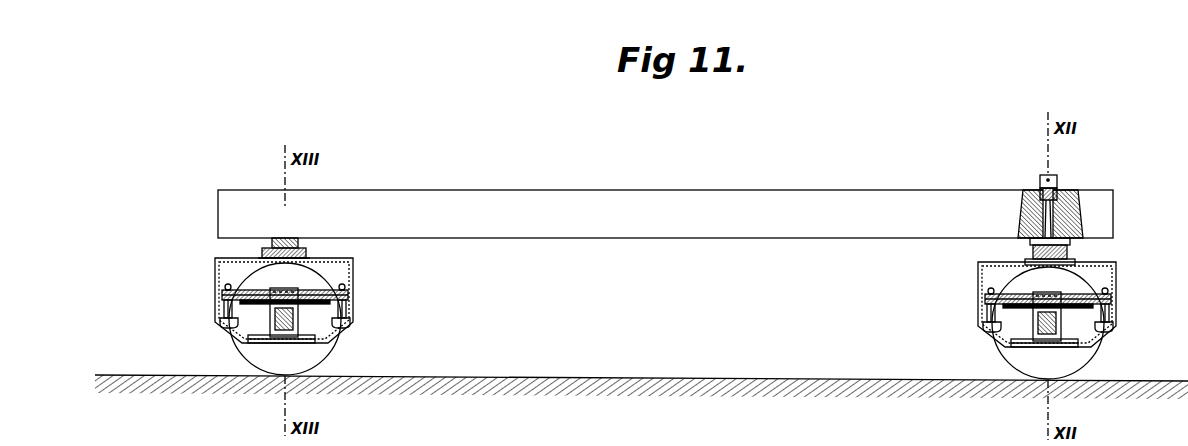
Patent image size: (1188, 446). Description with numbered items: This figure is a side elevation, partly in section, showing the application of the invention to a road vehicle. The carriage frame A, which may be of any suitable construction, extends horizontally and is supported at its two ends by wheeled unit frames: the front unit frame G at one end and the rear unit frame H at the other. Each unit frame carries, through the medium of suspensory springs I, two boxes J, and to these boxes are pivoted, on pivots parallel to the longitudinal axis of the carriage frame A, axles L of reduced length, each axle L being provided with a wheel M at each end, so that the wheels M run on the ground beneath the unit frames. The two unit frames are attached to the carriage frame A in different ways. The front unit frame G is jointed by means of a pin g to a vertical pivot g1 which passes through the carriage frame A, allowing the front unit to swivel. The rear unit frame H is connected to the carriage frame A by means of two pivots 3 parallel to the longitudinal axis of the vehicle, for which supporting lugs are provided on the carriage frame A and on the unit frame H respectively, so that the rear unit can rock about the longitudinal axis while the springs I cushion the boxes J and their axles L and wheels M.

The carriage frame A is at (652, 192).
The pivot 3 is at (293, 238).
The rear unit frame H is at (355, 273).
The front unit frame G is at (1124, 282).
The wheel M is at (315, 358).
The suspensory spring I is at (250, 294).
The box J is at (272, 318).
The axle L is at (288, 324).
The vertical pivot g1 is at (1077, 198).
The pin g is at (1070, 252).